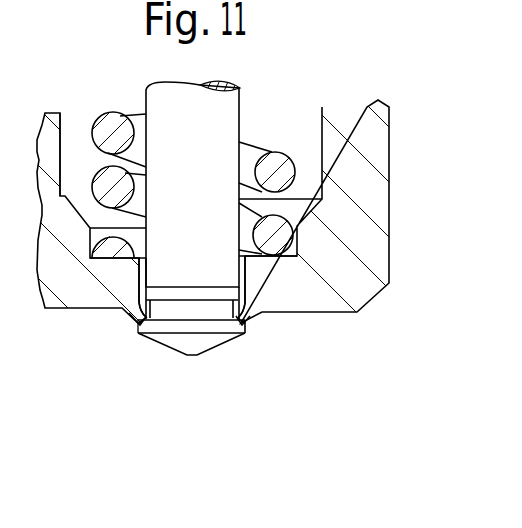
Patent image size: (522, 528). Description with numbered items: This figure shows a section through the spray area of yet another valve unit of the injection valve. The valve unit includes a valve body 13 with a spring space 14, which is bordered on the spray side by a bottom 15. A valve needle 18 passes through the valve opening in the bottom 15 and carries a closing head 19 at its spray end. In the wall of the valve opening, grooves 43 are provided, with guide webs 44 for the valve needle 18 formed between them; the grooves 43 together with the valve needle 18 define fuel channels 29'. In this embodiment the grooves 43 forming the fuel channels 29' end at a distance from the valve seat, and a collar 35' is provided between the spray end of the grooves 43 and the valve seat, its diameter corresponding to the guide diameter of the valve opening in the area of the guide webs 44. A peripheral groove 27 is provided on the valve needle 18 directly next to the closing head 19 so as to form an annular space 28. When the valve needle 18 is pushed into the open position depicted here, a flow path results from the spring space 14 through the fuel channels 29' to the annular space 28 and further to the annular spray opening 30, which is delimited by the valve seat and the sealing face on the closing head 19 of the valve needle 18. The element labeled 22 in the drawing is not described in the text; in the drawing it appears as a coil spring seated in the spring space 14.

The valve body 13 is at (337, 148).
The spring space 14 is at (72, 136).
The bottom 15 is at (293, 288).
The valve needle 18 is at (231, 125).
The closing head 19 is at (193, 343).
The compression spring 22 is at (113, 124).
The peripheral groove 27 is at (213, 312).
The annular space 28 is at (141, 320).
The fuel channels 29' is at (99, 324).
The annular spray opening 30 is at (245, 322).
The collar 35' is at (145, 363).
The grooves 43 is at (259, 315).
The guide webs 44 is at (145, 268).